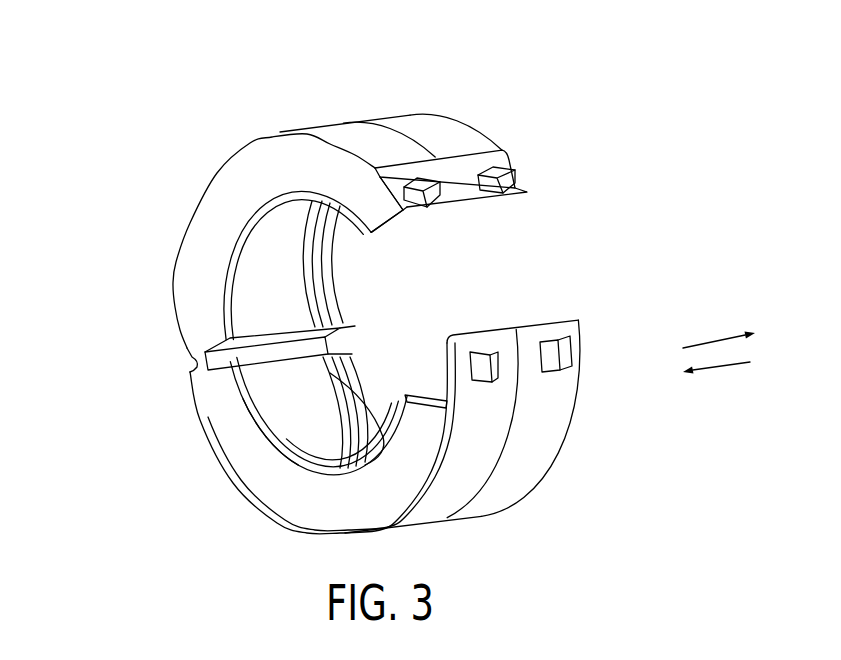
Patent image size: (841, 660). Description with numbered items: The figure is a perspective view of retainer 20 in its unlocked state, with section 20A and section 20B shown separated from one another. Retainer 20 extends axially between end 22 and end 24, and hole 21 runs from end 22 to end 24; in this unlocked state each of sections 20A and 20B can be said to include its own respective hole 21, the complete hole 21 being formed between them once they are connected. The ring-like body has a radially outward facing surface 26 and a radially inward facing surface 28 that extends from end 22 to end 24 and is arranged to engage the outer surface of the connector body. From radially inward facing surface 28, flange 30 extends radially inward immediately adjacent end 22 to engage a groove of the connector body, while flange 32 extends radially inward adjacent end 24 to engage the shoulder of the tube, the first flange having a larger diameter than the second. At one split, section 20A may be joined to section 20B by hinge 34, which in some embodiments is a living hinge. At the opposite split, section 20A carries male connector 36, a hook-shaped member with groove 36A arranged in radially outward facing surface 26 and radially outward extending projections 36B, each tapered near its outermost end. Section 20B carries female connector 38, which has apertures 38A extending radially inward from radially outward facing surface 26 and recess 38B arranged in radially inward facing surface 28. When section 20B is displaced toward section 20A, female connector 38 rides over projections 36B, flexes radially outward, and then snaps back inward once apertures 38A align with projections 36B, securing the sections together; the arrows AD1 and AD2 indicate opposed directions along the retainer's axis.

The retainer 20 is at (101, 67).
The section 20A is at (437, 132).
The section 20B is at (543, 453).
The hole 21 is at (318, 447).
The end 22 is at (480, 128).
The end 24 is at (200, 234).
The radially outward facing surface 26 is at (401, 126).
The radially inward facing surface 28 is at (300, 430).
The flange 30 is at (350, 368).
The flange 32 is at (258, 410).
The hinge 34 is at (170, 371).
The male connector 36 is at (563, 164).
The groove 36A is at (400, 193).
The projections 36B is at (430, 197).
The female connector 38 is at (608, 329).
The apertures 38A is at (477, 350).
The recess 38B is at (446, 380).
The first axial direction AD1 is at (723, 342).
The second axial direction AD2 is at (720, 367).